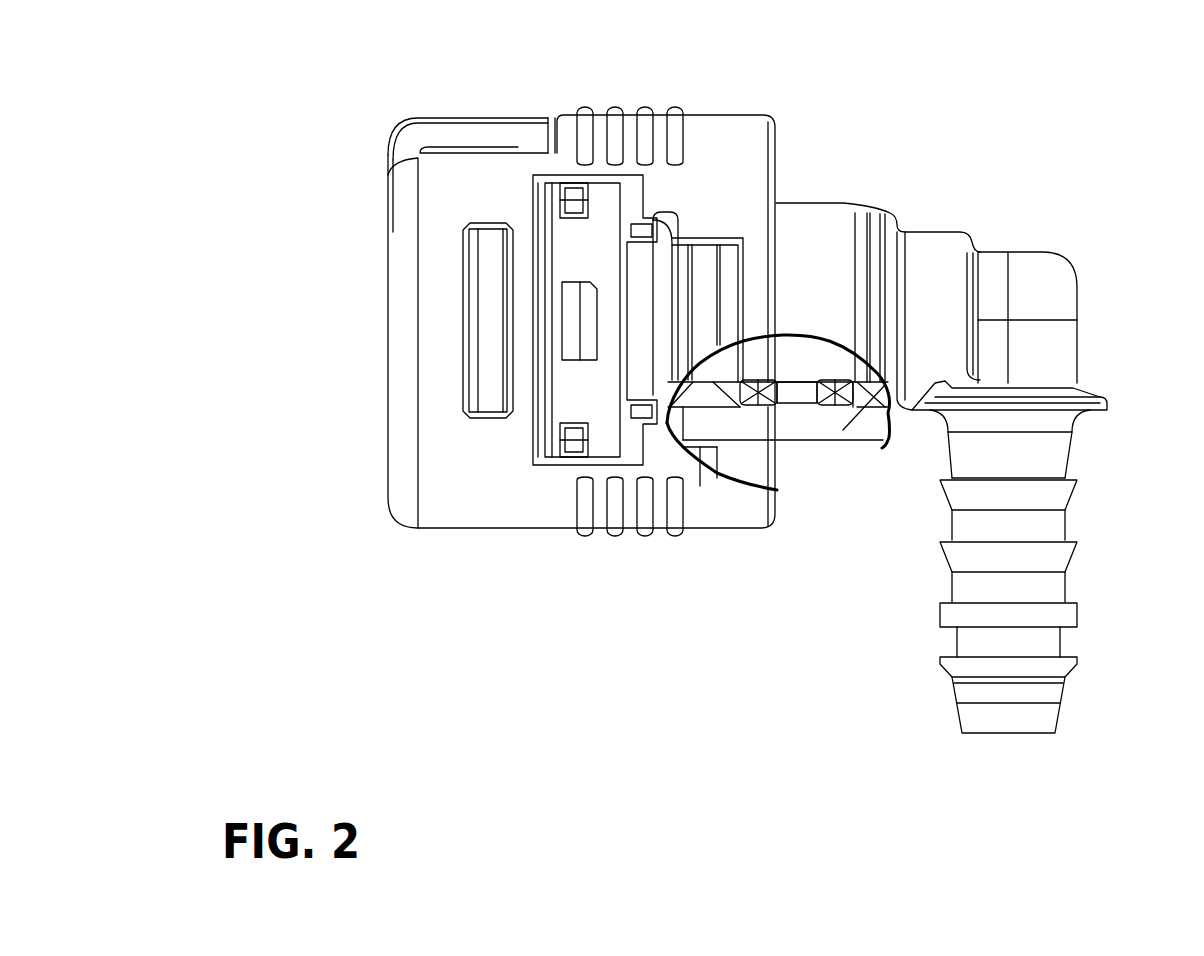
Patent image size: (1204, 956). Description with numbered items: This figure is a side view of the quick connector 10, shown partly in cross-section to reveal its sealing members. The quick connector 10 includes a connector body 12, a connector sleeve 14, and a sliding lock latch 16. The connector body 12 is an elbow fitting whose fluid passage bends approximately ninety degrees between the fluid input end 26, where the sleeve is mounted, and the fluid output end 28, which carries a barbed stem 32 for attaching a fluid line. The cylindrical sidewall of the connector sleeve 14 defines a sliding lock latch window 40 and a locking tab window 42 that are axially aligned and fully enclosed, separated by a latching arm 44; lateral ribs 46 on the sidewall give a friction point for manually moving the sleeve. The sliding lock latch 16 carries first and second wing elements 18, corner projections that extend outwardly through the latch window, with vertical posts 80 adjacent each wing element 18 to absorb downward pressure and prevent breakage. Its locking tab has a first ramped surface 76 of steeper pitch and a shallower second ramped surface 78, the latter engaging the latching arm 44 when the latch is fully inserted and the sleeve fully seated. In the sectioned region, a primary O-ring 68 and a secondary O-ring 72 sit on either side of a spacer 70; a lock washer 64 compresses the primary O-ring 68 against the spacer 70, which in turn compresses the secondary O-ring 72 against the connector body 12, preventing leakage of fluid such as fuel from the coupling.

The quick connector 10 is at (1099, 166).
The connector body 12 is at (944, 230).
The connector sleeve 14 is at (733, 110).
The sliding lock latch 16 is at (633, 270).
The wing elements 18 is at (588, 185).
The fluid input end 26 is at (378, 282).
The fluid output end 28 is at (1028, 744).
The barbed stem 32 is at (1075, 497).
The sliding lock latch window 40 is at (535, 200).
The locking tab window 42 is at (467, 345).
The latching arm 44 is at (525, 357).
The lateral ribs 46 is at (648, 112).
The lock washer 64 is at (713, 397).
The primary O-ring 68 is at (767, 407).
The spacer 70 is at (807, 410).
The secondary O-ring 72 is at (847, 413).
The first ramped surface 76 is at (575, 350).
The second ramped surface 78 is at (593, 315).
The vertical posts 80 is at (646, 212).